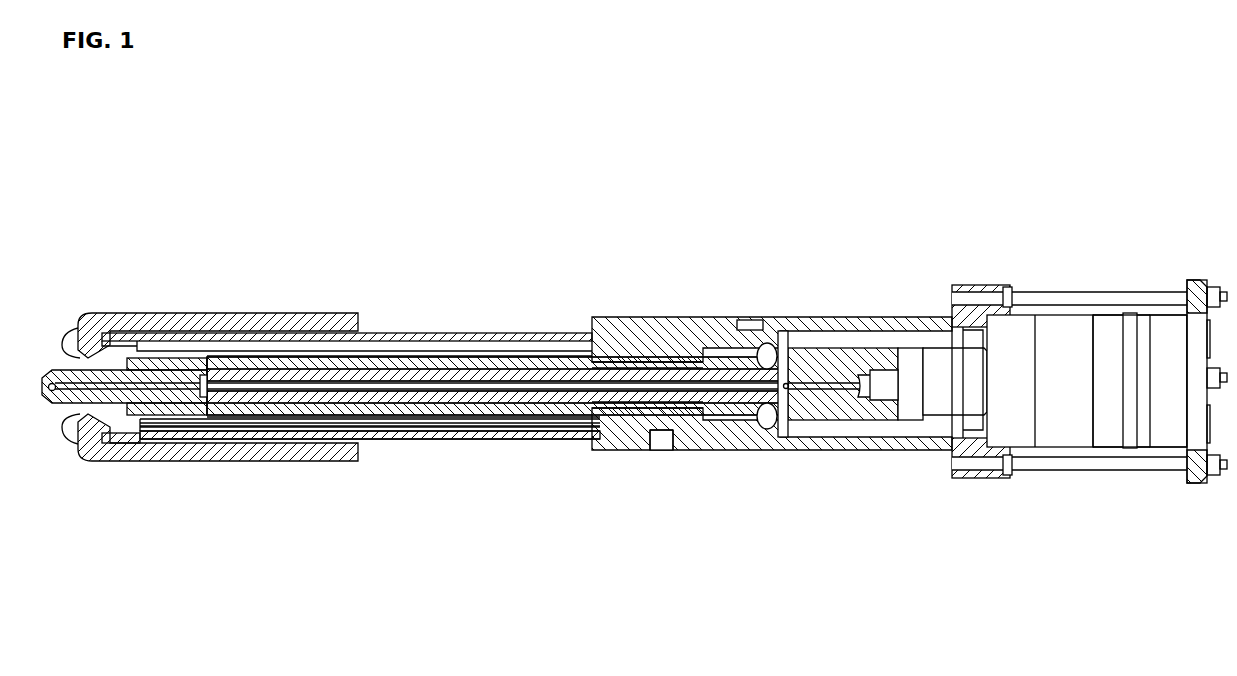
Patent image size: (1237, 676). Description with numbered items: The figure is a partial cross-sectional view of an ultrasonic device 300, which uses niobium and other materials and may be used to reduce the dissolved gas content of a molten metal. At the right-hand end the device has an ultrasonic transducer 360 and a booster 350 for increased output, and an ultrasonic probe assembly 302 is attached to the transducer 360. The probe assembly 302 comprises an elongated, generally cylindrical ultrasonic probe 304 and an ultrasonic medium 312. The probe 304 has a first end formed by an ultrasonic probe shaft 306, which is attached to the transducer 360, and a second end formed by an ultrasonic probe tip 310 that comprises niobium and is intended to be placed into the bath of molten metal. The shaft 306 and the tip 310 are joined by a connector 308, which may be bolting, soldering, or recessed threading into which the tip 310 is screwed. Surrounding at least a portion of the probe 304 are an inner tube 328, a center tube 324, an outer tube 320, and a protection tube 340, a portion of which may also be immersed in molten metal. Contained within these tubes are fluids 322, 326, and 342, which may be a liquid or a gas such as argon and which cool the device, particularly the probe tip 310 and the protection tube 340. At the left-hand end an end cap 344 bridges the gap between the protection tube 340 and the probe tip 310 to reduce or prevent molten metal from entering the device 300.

The ultrasonic device 300 is at (913, 141).
The ultrasonic probe assembly 302 is at (852, 410).
The ultrasonic probe 304 is at (395, 369).
The ultrasonic probe shaft 306 is at (513, 395).
The connector 308 is at (190, 396).
The ultrasonic probe tip 310 is at (60, 405).
The ultrasonic medium 312 is at (563, 387).
The outer tube 320 is at (437, 435).
The fluid 322 is at (358, 427).
The center tube 324 is at (315, 425).
The fluid 326 is at (278, 425).
The inner tube 328 is at (447, 356).
The protection tube 340 is at (150, 322).
The fluid 342 is at (197, 332).
The end cap 344 is at (58, 338).
The booster 350 is at (1057, 403).
The ultrasonic transducer 360 is at (1112, 348).